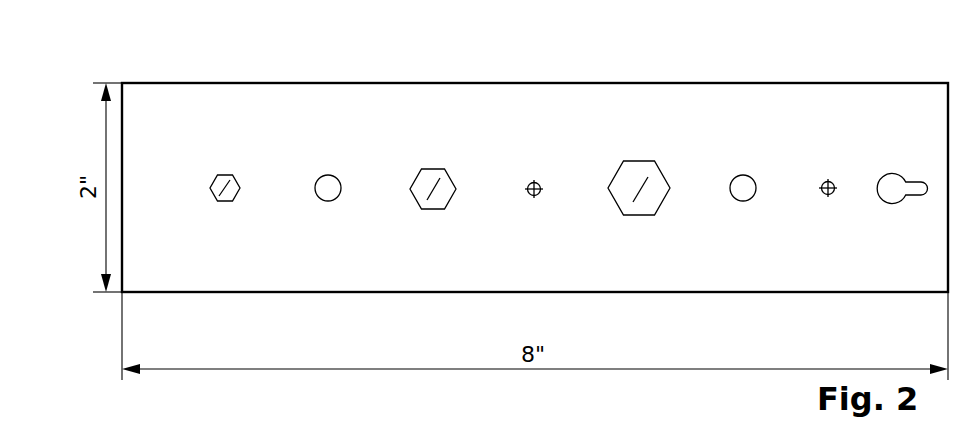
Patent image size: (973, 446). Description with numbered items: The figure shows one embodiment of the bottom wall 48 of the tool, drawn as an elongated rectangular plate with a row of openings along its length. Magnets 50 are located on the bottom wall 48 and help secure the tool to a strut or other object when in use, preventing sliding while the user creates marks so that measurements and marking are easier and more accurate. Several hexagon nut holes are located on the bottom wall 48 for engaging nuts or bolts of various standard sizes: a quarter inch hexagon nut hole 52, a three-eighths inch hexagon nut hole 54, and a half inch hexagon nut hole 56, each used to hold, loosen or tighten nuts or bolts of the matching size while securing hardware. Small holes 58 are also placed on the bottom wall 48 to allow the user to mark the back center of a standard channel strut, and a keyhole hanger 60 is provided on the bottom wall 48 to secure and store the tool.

The bottom wall 48 is at (145, 135).
The magnets 50 is at (327, 175).
The ¼ inch hexagon nut hole 52 is at (225, 175).
The ⅜ inch hexagon nut hole 54 is at (433, 175).
The ½ inch hexagon nut hole 56 is at (638, 175).
The holes 58 is at (534, 182).
The keyhole hanger 60 is at (908, 180).